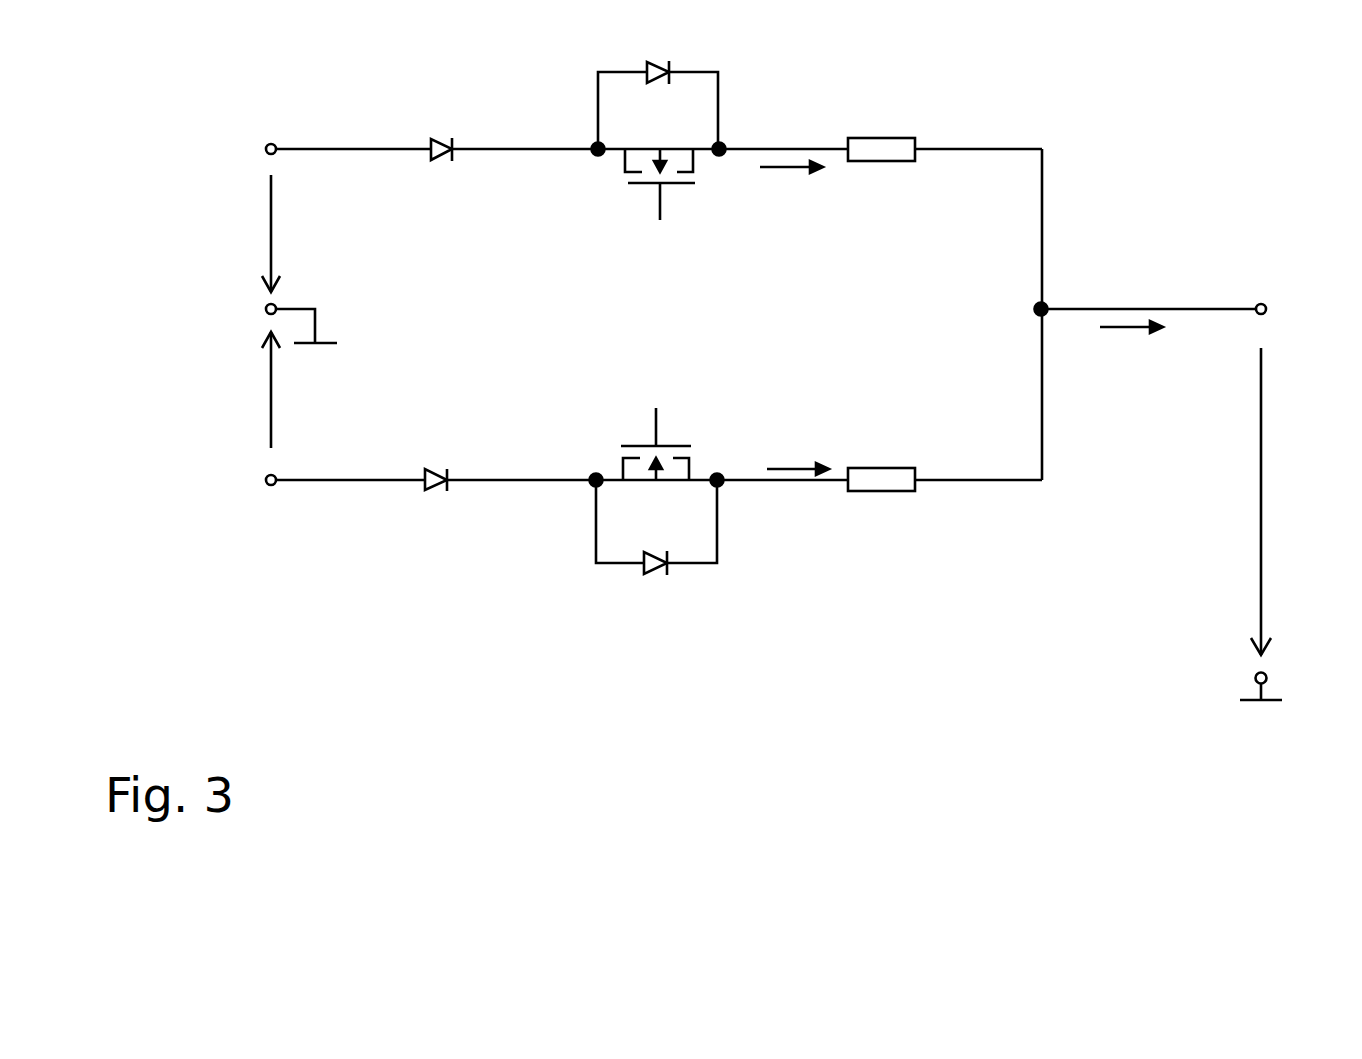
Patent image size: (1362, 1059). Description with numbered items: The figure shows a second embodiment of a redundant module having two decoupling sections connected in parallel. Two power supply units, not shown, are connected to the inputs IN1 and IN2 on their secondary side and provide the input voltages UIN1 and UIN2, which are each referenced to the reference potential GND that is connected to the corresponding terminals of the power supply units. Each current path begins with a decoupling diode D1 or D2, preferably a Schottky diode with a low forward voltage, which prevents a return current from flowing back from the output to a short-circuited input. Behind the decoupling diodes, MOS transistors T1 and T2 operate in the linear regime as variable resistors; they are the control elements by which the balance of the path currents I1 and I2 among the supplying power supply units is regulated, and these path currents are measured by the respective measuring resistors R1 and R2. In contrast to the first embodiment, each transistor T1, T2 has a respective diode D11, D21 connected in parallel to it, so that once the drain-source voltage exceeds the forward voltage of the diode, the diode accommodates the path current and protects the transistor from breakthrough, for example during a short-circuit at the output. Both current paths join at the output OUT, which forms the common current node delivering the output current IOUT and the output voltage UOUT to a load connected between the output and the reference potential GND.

The input IN1 is at (240, 148).
The input IN2 is at (240, 480).
The output OUT is at (1298, 308).
The reference potential GND is at (805, 501).
The decoupling diode D1 is at (442, 132).
The decoupling diode D2 is at (441, 500).
The diode D11 is at (658, 89).
The diode D21 is at (656, 546).
The MOS transistor T1 is at (660, 161).
The MOS transistor T2 is at (656, 469).
The measuring resistor R1 is at (881, 129).
The measuring resistor R2 is at (881, 500).
The first current I1 is at (791, 192).
The second current I2 is at (798, 450).
The output current IOUT is at (1131, 351).
The first input voltage UIN1 is at (232, 233).
The second input voltage UIN2 is at (232, 390).
The output voltage UOUT is at (1298, 501).